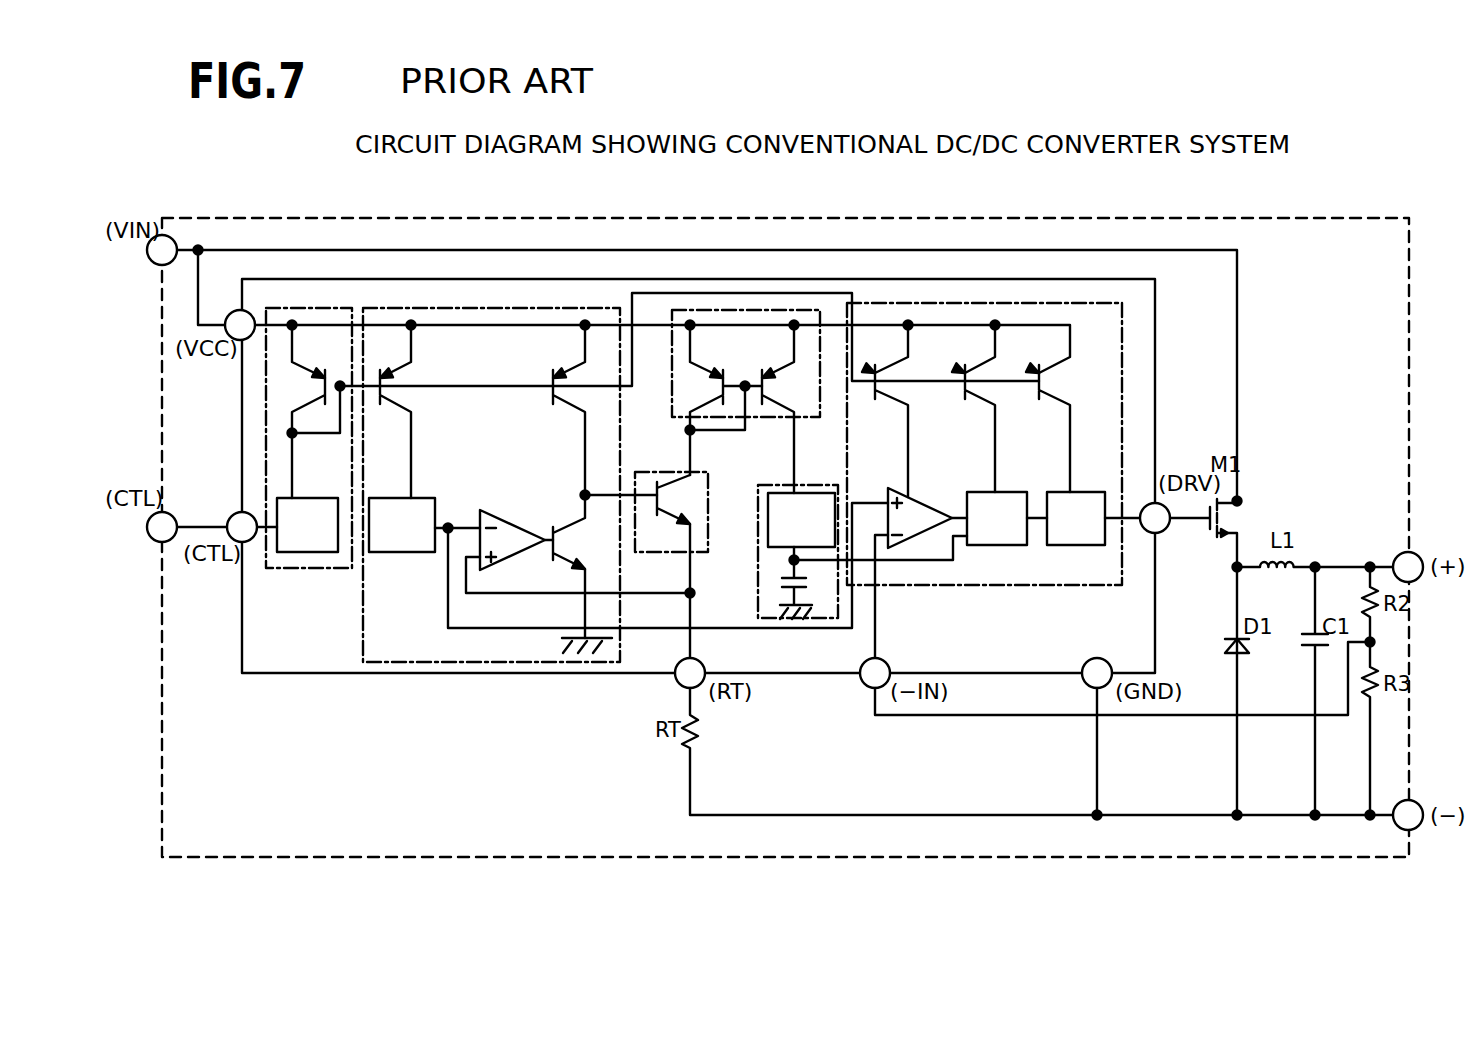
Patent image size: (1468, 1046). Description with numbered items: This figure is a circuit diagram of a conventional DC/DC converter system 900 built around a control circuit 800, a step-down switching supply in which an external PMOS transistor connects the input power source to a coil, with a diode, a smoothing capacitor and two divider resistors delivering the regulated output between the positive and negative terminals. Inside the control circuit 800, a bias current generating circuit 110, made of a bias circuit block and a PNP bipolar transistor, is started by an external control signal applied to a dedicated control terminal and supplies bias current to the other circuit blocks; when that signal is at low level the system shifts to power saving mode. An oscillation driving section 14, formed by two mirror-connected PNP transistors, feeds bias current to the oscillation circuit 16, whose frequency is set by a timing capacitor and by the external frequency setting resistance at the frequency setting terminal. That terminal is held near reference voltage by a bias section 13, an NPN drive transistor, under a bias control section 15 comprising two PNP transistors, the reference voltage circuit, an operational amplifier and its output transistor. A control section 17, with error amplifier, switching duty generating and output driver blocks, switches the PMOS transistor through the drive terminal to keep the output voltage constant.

The DC/DC converter system 900 is at (1168, 217).
The control circuit 800 is at (1022, 250).
The bias current generating circuit 110 is at (310, 568).
The bias control section 15 is at (450, 663).
The oscillation driving section 14 is at (775, 418).
The bias section 13 is at (708, 503).
The oscillation circuit 16 is at (816, 620).
The control section 17 is at (1062, 586).